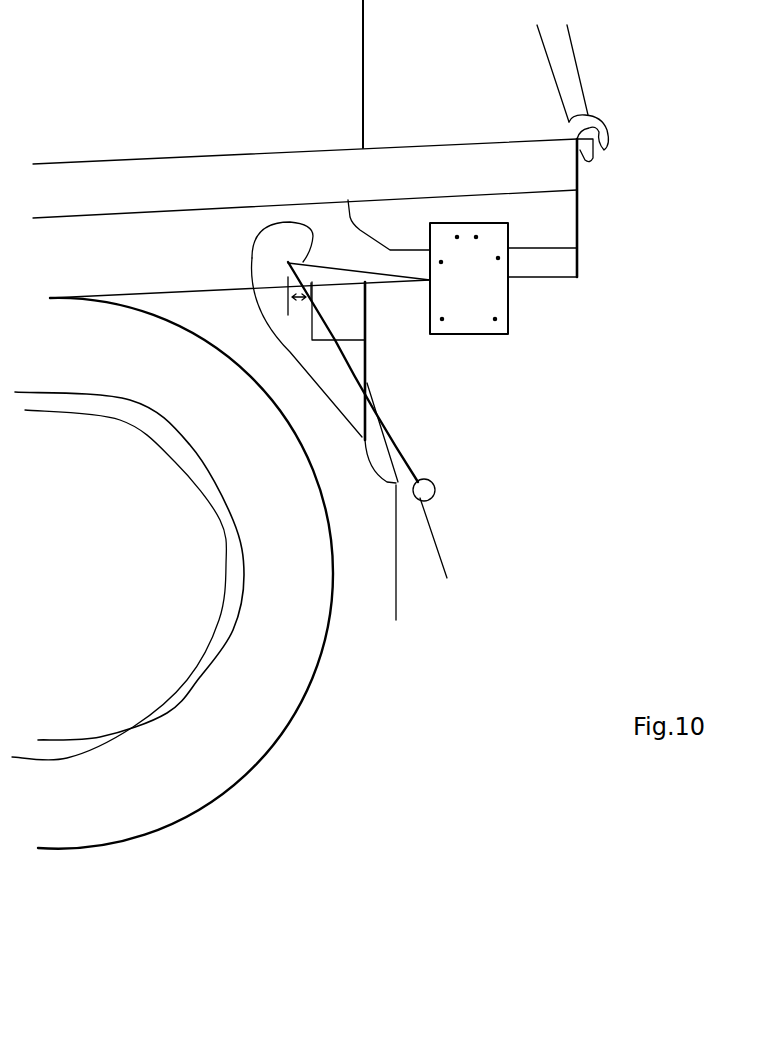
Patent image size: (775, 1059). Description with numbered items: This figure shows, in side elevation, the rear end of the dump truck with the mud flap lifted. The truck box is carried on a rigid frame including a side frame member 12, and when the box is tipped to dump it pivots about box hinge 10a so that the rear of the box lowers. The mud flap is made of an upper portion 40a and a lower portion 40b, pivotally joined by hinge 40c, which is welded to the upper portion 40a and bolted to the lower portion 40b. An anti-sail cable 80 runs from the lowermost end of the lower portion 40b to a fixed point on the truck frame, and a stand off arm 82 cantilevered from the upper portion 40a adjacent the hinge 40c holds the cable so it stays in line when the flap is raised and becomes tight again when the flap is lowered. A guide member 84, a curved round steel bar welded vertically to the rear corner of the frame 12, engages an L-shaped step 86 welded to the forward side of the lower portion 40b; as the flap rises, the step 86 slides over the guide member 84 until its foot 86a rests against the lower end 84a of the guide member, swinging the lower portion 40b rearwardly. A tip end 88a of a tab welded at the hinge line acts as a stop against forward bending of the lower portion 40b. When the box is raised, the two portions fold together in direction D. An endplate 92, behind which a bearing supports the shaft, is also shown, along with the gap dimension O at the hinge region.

The box hinge 10a is at (335, 317).
The side frame member 12 is at (370, 365).
The upper portion 40a is at (341, 268).
The lower portion 40b is at (380, 410).
The hinge 40c is at (288, 262).
The anti-sail cable 80 is at (283, 340).
The stand off arm 82 is at (301, 259).
The guide member 84 is at (388, 482).
The lower end of the guide member 84a is at (398, 567).
The step 86 is at (313, 438).
The foot 86a is at (463, 554).
The tip end 88a is at (287, 263).
The endplate 92 is at (502, 288).
The direction D is at (397, 370).
The gap dimension O is at (293, 312).